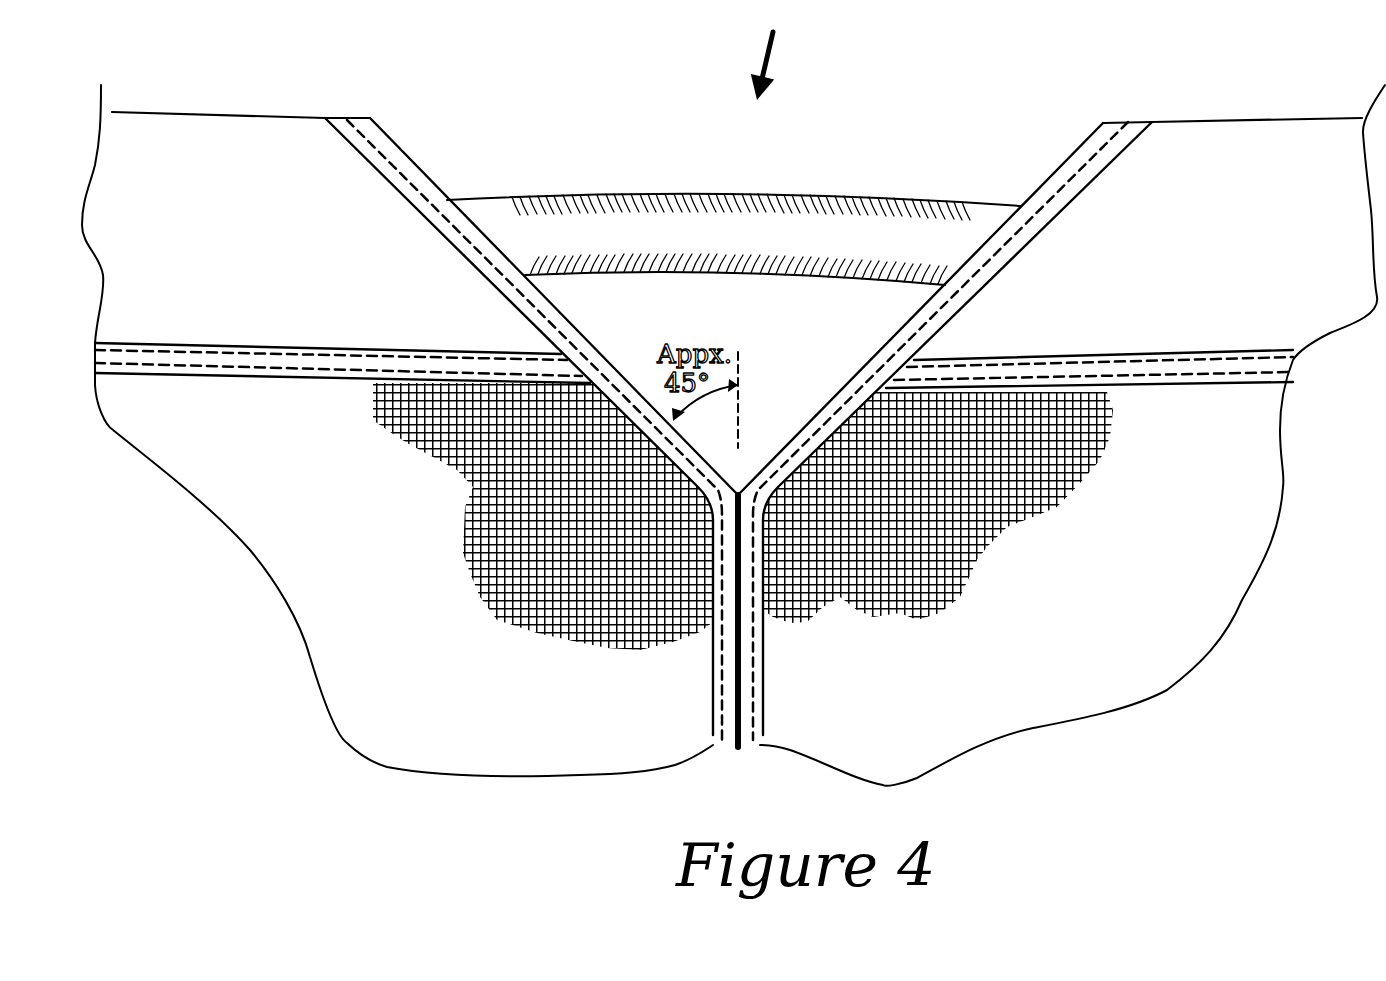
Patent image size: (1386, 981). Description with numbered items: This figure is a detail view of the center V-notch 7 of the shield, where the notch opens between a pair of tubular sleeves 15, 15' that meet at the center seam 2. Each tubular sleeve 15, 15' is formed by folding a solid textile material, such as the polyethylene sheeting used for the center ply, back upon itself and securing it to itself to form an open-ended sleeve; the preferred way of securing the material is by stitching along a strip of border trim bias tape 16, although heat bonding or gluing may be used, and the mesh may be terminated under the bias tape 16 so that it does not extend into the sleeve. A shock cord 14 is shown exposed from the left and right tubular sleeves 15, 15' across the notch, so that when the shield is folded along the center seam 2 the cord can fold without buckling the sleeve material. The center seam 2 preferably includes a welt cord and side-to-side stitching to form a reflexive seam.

The center seam 2 is at (736, 490).
The front V-notch 7 is at (769, 50).
The shock cord 14 is at (835, 228).
The tubular sleeve 15 is at (1072, 415).
The tubular sleeve 15' is at (397, 391).
The border trim bias tape 16 is at (590, 360).